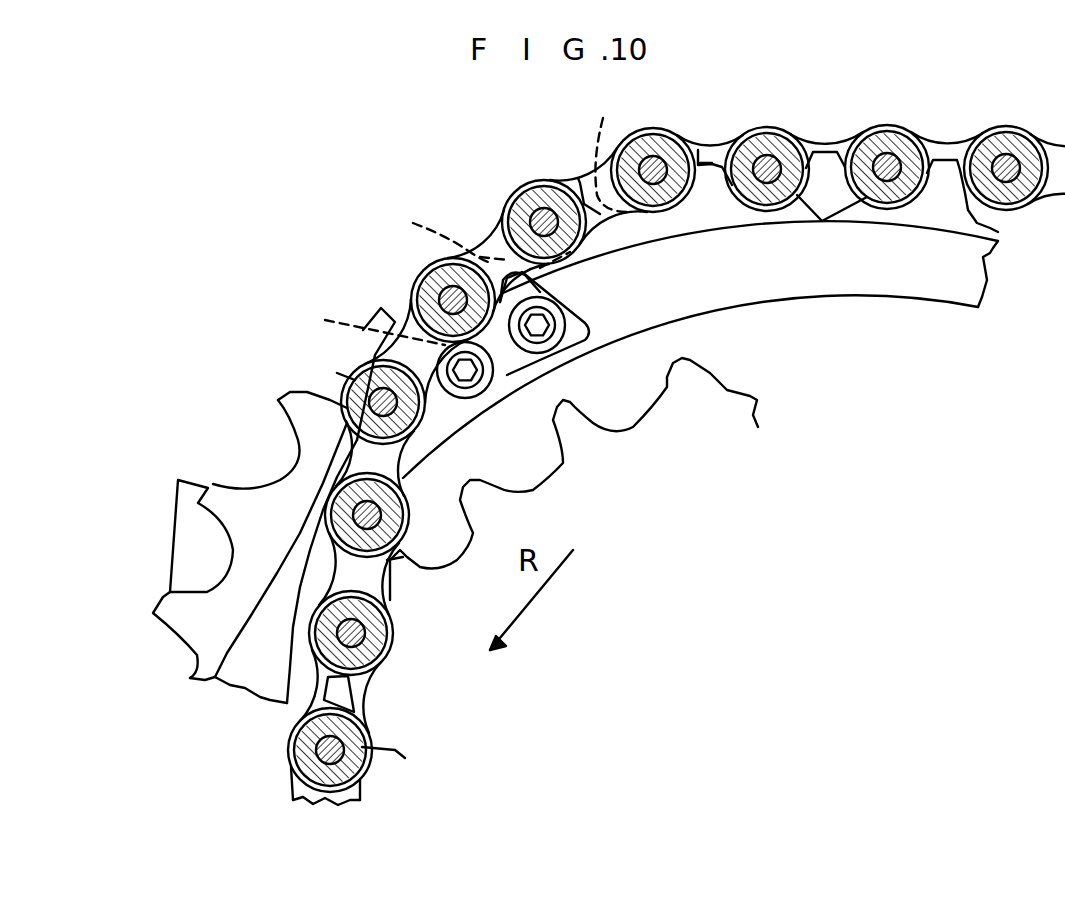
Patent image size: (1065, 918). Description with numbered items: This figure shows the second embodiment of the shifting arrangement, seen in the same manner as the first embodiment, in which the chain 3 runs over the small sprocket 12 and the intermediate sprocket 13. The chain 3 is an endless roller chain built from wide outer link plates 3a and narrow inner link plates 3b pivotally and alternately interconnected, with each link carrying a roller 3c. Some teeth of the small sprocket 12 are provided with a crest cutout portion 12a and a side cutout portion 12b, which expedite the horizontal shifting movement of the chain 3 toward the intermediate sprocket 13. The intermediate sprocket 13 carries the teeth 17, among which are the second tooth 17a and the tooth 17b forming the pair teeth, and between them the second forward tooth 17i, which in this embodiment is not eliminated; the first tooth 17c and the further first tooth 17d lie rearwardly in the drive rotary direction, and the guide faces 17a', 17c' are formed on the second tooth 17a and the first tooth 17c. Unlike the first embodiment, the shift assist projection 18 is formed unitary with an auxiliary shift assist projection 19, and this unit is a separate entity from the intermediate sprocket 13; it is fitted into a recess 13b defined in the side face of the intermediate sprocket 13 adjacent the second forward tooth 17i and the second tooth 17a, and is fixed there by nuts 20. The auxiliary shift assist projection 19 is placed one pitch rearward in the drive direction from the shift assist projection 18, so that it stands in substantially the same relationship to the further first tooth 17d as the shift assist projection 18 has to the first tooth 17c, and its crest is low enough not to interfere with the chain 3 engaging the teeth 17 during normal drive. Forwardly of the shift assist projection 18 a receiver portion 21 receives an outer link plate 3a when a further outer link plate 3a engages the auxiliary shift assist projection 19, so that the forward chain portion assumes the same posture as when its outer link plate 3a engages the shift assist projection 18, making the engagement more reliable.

The chain 3 is at (647, 465).
The outer link plate 3a is at (493, 230).
The inner link plate 3b is at (403, 327).
The roller 3c is at (822, 222).
The small sprocket 12 is at (558, 546).
The crest cutout portion 12a is at (447, 573).
The side cutout portion 12b is at (347, 700).
The intermediate sprocket 13 is at (700, 349).
The recess 13b is at (506, 380).
The teeth 17 is at (454, 394).
The second tooth 17a is at (484, 240).
The guide face 17a' is at (425, 231).
The tooth of the pair teeth 17b is at (290, 392).
The first tooth 17c is at (562, 173).
The guide face 17c' is at (614, 148).
The further first tooth 17d is at (708, 160).
The second forward tooth 17i is at (370, 363).
The shift assist projection 18 is at (431, 298).
The auxiliary shift assist projection 19 is at (560, 298).
The nut 20 is at (548, 338).
The receiver portion 21 is at (423, 403).